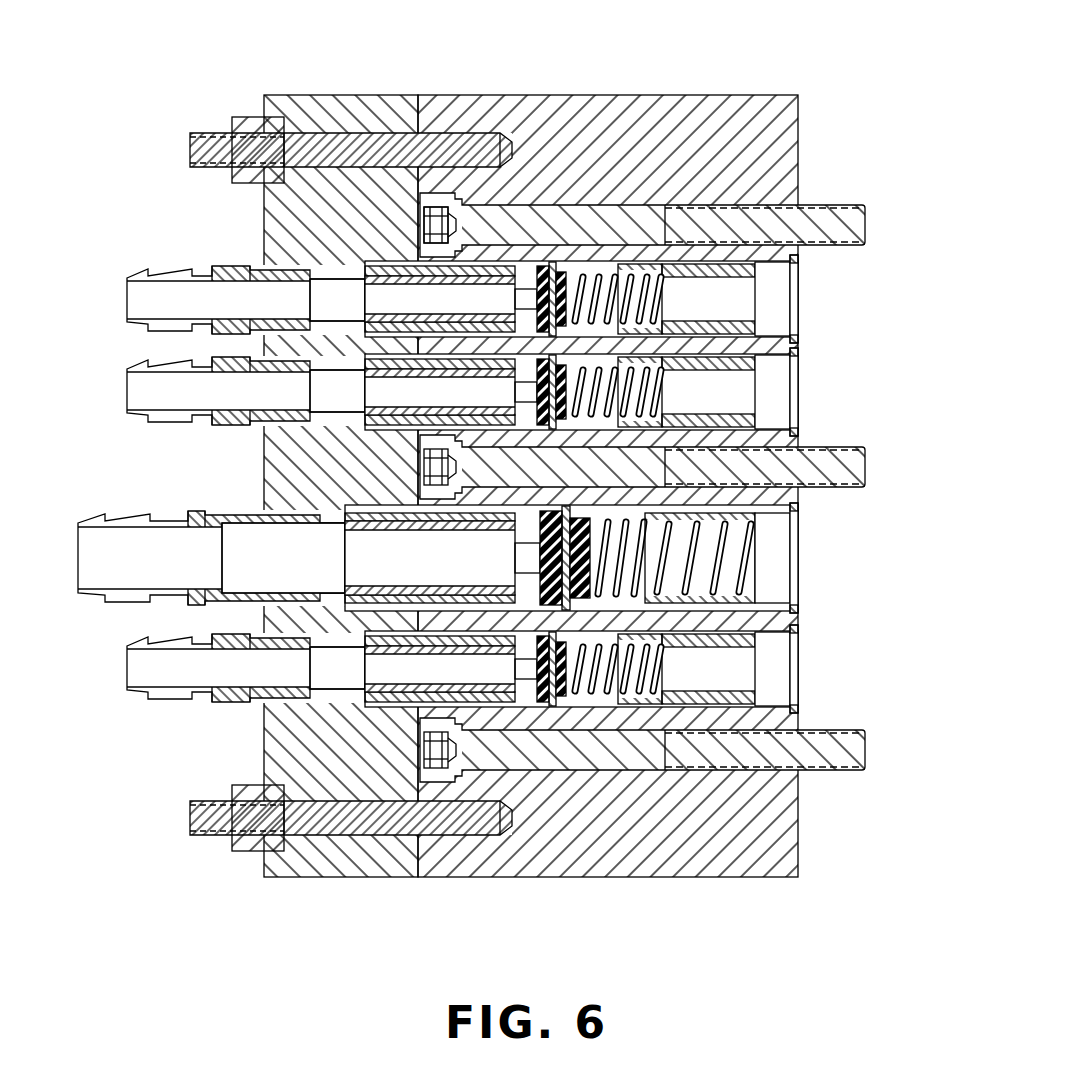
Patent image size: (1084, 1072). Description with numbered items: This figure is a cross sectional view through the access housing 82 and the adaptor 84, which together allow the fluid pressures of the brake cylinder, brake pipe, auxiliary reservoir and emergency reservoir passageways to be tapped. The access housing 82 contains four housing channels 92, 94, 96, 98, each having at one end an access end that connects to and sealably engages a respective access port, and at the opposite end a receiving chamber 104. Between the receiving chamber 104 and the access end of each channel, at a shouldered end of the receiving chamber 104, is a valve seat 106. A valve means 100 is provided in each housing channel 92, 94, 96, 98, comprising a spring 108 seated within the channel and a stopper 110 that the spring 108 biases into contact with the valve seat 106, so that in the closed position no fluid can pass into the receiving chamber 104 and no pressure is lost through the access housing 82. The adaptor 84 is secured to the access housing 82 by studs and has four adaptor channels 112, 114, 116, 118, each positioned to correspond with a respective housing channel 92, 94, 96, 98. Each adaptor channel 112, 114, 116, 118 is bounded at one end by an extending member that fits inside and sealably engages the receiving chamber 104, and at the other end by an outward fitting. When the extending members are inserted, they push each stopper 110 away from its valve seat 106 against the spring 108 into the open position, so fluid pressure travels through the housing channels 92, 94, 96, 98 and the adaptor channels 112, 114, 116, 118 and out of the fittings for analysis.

The access housing 82 is at (775, 124).
The adaptor 84 is at (336, 108).
The housing channel 92 is at (629, 669).
The housing channel 94 is at (619, 558).
The housing channel 96 is at (629, 392).
The housing channel 98 is at (629, 180).
The valve stem 100 is at (522, 262).
The receiving chamber 104 is at (472, 192).
The valve seat 106 is at (541, 262).
The spring 108 is at (658, 264).
The stopper 110 is at (612, 270).
The adaptor channel 112 is at (335, 690).
The adaptor channel 114 is at (330, 525).
The adaptor channel 116 is at (345, 408).
The adaptor channel 118 is at (330, 278).